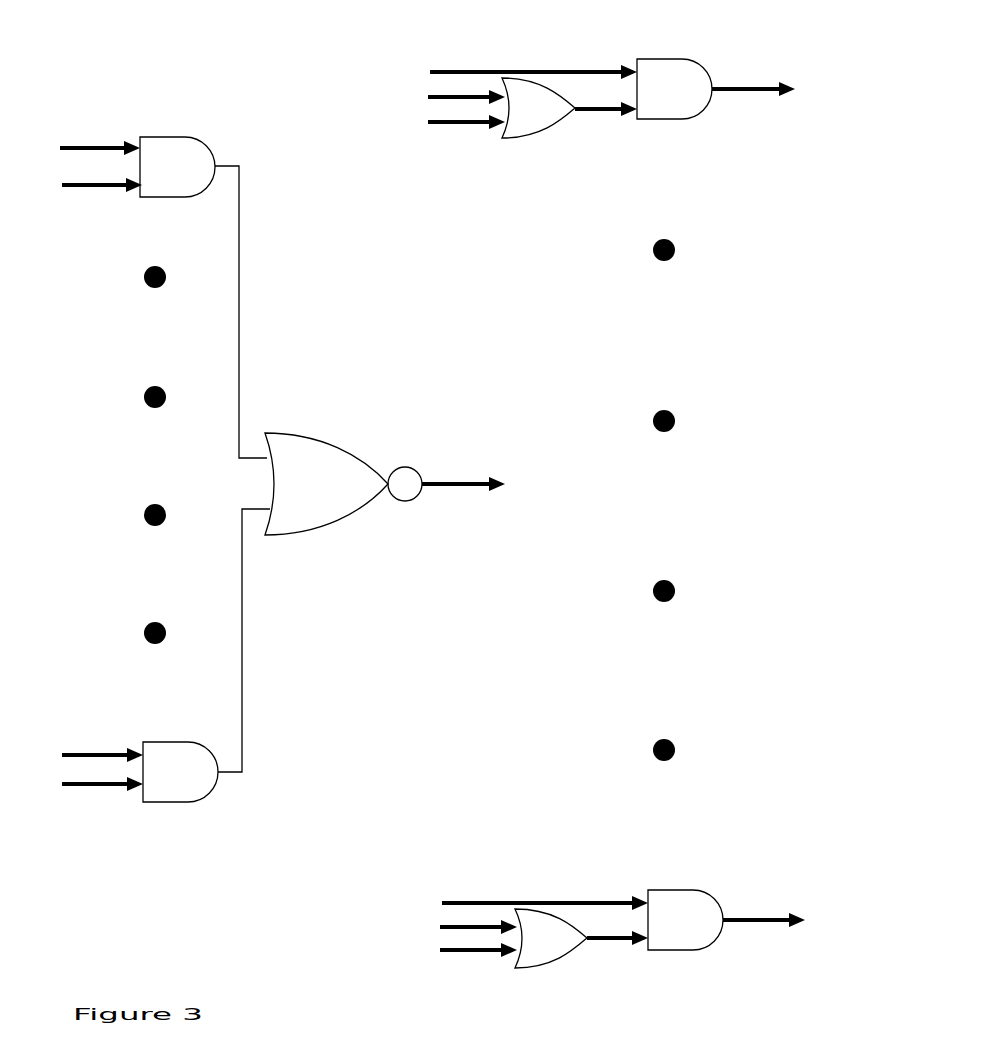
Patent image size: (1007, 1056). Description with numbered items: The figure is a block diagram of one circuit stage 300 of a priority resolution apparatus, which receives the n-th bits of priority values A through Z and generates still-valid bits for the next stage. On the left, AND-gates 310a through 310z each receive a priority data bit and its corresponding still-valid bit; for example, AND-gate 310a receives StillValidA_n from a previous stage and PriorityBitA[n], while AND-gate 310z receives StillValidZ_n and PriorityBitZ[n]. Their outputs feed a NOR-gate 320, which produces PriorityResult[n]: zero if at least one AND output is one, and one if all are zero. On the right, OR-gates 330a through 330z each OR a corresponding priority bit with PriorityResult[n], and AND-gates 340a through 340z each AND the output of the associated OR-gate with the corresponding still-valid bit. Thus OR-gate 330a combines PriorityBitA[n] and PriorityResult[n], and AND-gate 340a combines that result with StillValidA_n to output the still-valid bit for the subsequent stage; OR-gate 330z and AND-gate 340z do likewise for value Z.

The circuit stage 300 is at (619, 20).
The AND-gate 310a is at (165, 137).
The AND-gate 310z is at (170, 802).
The NOR-gate 320 is at (288, 535).
The OR-gate 330a is at (535, 138).
The OR-gate 330z is at (557, 968).
The AND-gate 340a is at (703, 119).
The AND-gate 340z is at (692, 949).